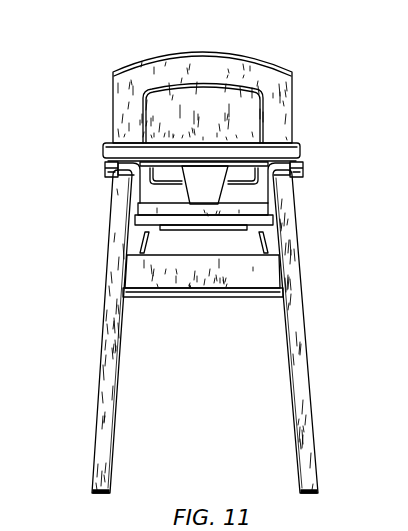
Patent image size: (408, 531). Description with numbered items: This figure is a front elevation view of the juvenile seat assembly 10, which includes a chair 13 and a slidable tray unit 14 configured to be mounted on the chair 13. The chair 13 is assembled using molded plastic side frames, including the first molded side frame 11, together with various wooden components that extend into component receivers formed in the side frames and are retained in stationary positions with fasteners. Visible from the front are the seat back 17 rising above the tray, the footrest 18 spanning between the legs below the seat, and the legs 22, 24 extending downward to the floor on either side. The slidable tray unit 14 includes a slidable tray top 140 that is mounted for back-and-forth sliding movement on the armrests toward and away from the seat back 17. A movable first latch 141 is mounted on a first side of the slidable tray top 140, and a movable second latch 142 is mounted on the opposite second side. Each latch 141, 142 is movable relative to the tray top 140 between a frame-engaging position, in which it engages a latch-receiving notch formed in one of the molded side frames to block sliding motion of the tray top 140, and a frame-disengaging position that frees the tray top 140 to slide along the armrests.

The juvenile seat assembly 10 is at (302, 64).
The first molded side frame 11 is at (108, 179).
The chair 13 is at (116, 118).
The slidable tray unit 14 is at (272, 136).
The slidable tray top 140 is at (201, 138).
The movable first latch 141 is at (105, 170).
The movable second latch 142 is at (303, 172).
The seat back 17 is at (152, 58).
The footrest 18 is at (183, 298).
The leg 22 is at (98, 412).
The leg 24 is at (292, 410).